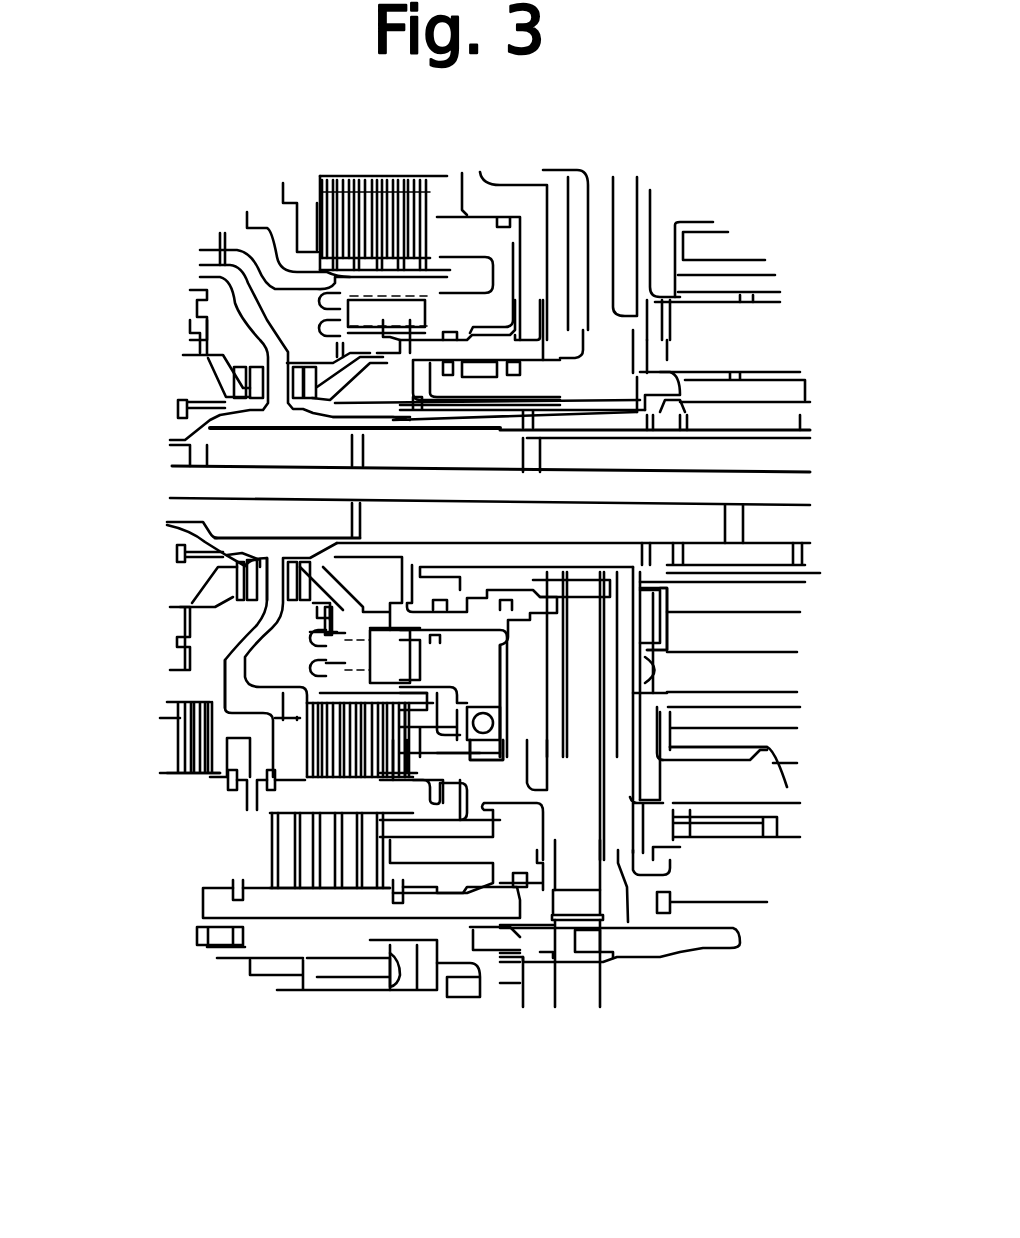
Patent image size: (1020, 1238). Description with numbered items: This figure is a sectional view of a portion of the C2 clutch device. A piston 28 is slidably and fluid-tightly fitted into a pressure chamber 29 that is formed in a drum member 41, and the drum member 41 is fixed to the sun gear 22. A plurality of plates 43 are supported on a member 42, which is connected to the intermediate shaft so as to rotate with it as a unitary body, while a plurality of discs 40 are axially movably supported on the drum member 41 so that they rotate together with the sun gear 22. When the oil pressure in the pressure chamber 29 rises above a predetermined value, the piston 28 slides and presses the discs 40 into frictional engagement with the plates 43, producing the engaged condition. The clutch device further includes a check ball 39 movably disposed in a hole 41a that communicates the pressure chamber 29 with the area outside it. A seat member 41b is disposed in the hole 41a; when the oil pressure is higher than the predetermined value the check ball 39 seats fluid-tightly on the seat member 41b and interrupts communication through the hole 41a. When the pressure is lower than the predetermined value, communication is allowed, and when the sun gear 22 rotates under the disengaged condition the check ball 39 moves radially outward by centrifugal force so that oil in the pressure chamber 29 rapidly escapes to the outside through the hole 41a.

The sun gear 22 is at (725, 573).
The piston 28 is at (510, 690).
The pressure chamber 29 is at (480, 733).
The check ball 39 is at (480, 750).
The discs 40 is at (405, 740).
The drum member 41 is at (513, 777).
The hole 41a is at (480, 733).
The seat member 41b is at (510, 690).
The member 42 is at (320, 697).
The plates 43 is at (203, 805).